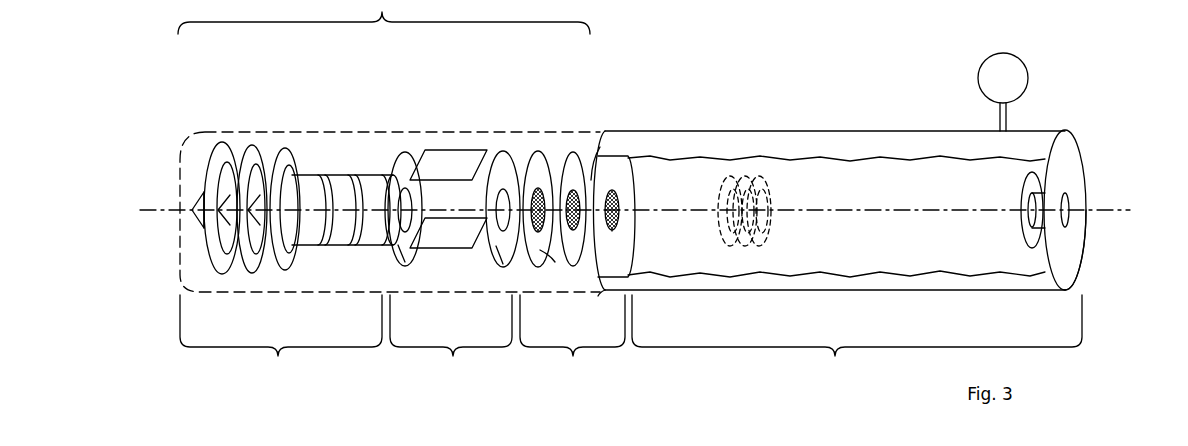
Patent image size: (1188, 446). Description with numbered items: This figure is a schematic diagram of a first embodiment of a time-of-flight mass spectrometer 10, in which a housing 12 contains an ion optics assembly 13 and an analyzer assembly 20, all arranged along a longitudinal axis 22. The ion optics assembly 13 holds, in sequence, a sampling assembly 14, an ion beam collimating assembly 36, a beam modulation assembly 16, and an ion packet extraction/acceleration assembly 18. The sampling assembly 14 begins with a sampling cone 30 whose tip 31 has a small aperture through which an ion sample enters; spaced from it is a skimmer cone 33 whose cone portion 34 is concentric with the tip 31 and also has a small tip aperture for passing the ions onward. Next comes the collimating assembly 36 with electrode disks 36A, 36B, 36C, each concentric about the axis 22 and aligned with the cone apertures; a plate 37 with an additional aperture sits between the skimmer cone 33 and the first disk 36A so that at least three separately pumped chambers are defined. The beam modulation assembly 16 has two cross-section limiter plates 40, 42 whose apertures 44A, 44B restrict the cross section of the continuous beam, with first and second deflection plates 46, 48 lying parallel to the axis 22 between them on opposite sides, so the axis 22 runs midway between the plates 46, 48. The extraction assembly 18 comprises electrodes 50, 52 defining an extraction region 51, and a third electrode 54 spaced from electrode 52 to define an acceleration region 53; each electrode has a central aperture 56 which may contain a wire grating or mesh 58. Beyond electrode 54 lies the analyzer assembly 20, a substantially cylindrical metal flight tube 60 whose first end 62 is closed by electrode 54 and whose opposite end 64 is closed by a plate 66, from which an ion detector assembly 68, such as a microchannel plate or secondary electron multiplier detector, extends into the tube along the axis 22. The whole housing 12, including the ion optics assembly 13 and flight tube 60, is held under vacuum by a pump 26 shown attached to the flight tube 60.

The time-of-flight mass spectrometer 10 is at (848, 88).
The housing 12 is at (190, 147).
The ion optics assembly 13 is at (384, 17).
The sampling assembly 14 is at (281, 338).
The beam modulation assembly 16 is at (451, 338).
The ion packet extraction/acceleration assembly 18 is at (572, 338).
The analyzer assembly 20 is at (857, 338).
The longitudinal axis 22 is at (1097, 205).
The pump 26 is at (1018, 55).
The sampling cone 30 is at (221, 142).
The tip of the cone 31 is at (193, 212).
The skimmer cone 33 is at (251, 145).
The cone portion 34 is at (223, 200).
The ion beam collimating assembly 36 is at (346, 146).
The electrode disk 36A is at (312, 178).
The electrode disk 36B is at (341, 178).
The electrode disk 36C is at (373, 180).
The plate 37 is at (285, 147).
The ion beam cross-section limiter plate 40 is at (405, 150).
The ion beam cross-section limiter plate 42 is at (505, 150).
The aperture 44A is at (400, 246).
The aperture 44B is at (497, 246).
The first beam deflection plate 46 is at (436, 175).
The second beam deflection plate 48 is at (436, 243).
The electrode 50 is at (540, 150).
The extraction region 51 is at (557, 268).
The electrode 52 is at (575, 150).
The acceleration region 53 is at (591, 149).
The third electrode 54 is at (610, 165).
The aperture 56 is at (538, 232).
The wire grating, grid, or mesh 58 is at (538, 190).
The flight tube 60 is at (678, 131).
The first end 62 is at (604, 290).
The opposite end 64 is at (1066, 130).
The plate 66 is at (1072, 237).
The ion detector assembly 68 is at (1021, 226).